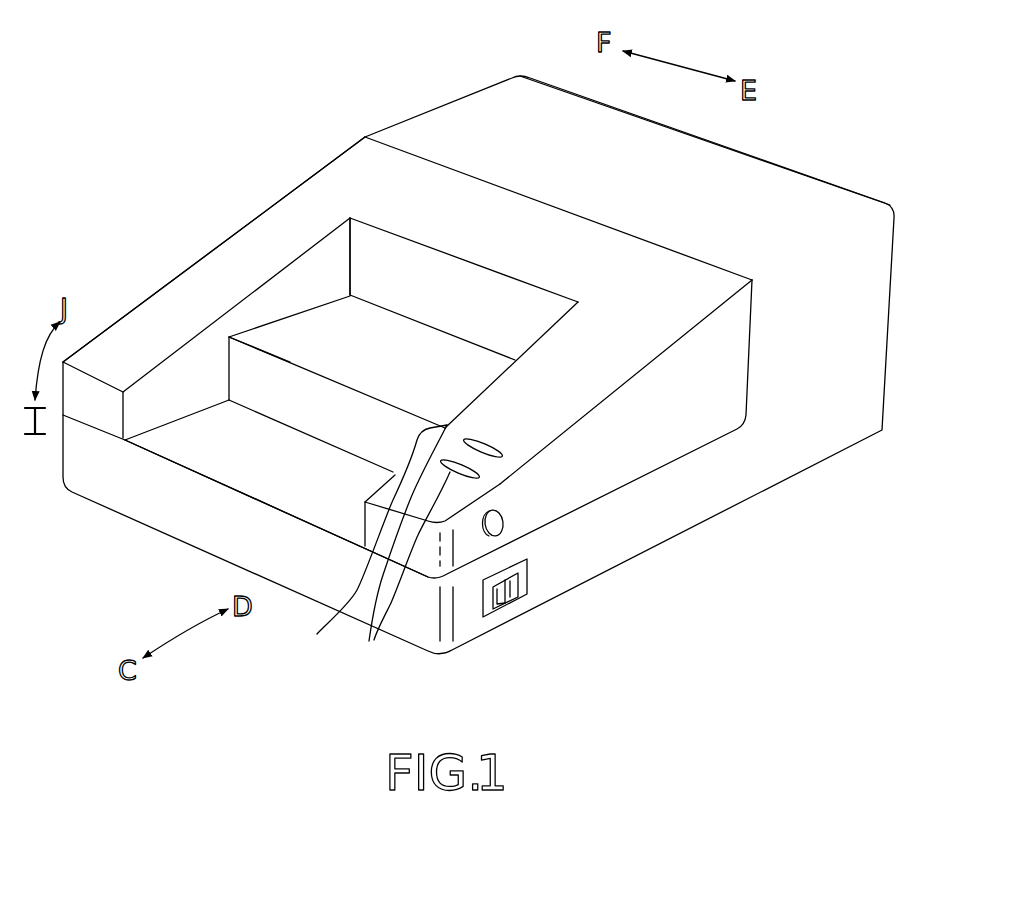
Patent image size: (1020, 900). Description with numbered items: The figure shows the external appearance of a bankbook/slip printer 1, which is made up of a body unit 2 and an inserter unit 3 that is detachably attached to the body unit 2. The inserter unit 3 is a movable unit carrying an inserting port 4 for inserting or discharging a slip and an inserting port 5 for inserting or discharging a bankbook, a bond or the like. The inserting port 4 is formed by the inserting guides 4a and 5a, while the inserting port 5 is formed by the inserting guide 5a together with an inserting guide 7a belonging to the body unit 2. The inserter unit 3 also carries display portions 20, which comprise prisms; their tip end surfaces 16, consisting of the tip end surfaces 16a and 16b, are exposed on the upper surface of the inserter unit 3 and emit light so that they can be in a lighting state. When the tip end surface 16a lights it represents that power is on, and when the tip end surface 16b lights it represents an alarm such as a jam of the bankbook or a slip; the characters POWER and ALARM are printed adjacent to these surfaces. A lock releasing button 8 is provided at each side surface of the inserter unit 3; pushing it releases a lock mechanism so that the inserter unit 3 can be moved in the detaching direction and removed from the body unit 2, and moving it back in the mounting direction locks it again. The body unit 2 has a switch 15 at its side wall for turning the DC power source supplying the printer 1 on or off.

The bankbook/slip printer 1 is at (727, 519).
The body unit 2 is at (683, 131).
The inserter unit 3 is at (280, 200).
The inserting port 4 is at (420, 331).
The inserting guide 4a is at (372, 260).
The inserting port 5 is at (331, 450).
The inserting guide 5a is at (273, 342).
The inserting guide 7a is at (231, 467).
The lock releasing button 8 is at (505, 516).
The switch 15 is at (526, 597).
The tip end surfaces 16 is at (375, 563).
The tip end surface 16a is at (406, 549).
The tip end surface 16b is at (373, 547).
The display portions 20 is at (507, 461).